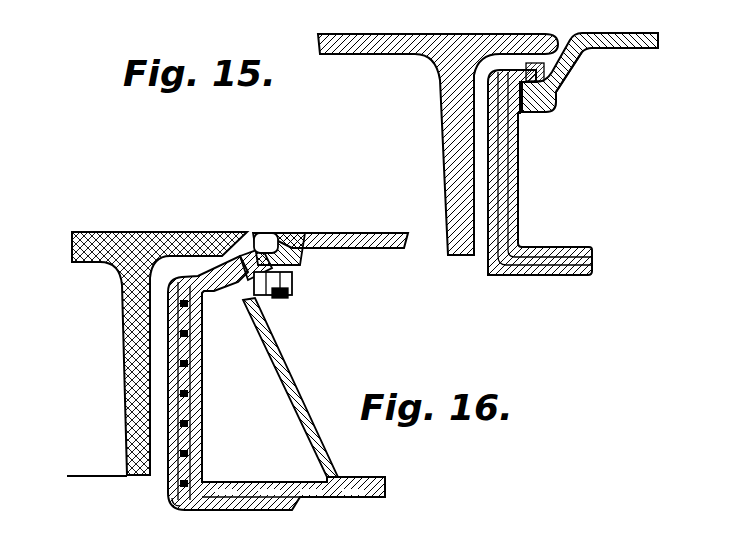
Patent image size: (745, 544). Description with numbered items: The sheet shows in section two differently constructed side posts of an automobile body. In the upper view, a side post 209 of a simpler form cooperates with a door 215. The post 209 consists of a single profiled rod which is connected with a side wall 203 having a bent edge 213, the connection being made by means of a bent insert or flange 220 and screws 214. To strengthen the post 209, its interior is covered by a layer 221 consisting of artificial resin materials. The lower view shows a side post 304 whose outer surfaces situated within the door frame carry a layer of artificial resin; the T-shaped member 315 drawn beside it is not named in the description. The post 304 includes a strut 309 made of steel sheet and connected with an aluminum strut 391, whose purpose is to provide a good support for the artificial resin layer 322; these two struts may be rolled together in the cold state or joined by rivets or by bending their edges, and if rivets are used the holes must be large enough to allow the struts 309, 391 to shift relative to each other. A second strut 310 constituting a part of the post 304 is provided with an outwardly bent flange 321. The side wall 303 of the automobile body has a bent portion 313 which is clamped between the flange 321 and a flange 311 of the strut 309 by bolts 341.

In FIG. 15, the side wall 203 is at (650, 42).
In FIG. 15, the side post 209 is at (492, 182).
In FIG. 15, the bent edge 213 is at (565, 62).
In FIG. 15, the screws 214 is at (522, 72).
In FIG. 15, the door 215 is at (455, 128).
In FIG. 15, the bent insert or flange 220 is at (500, 128).
In FIG. 15, the layer of artificial resin 221 is at (510, 218).
In FIG. 16, the side wall 303 is at (362, 238).
In FIG. 16, the side post 304 is at (267, 432).
In FIG. 16, the strut 309 is at (200, 372).
In FIG. 16, the second strut 310 is at (280, 372).
In FIG. 16, the flange 311 is at (270, 238).
In FIG. 16, the bent portion 313 is at (248, 285).
In FIG. 16, the T-shaped support member 315 is at (93, 265).
In FIG. 16, the outwardly bent flange 321 is at (297, 262).
In FIG. 16, the artificial resin layer 322 is at (180, 475).
In FIG. 16, the bolts 341 is at (295, 240).
In FIG. 16, the aluminum strut 391 is at (200, 446).